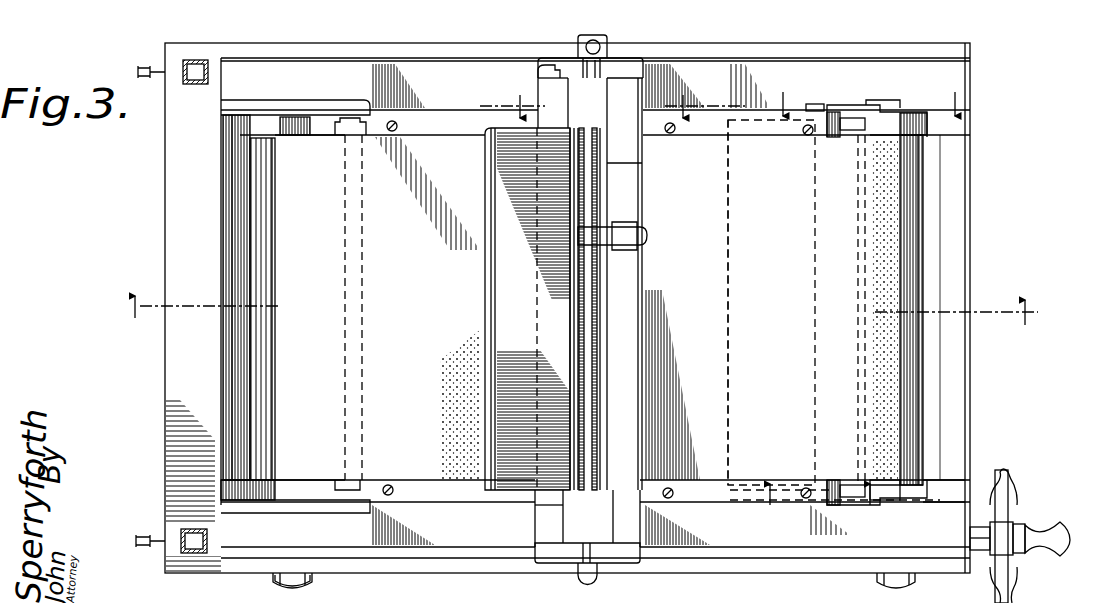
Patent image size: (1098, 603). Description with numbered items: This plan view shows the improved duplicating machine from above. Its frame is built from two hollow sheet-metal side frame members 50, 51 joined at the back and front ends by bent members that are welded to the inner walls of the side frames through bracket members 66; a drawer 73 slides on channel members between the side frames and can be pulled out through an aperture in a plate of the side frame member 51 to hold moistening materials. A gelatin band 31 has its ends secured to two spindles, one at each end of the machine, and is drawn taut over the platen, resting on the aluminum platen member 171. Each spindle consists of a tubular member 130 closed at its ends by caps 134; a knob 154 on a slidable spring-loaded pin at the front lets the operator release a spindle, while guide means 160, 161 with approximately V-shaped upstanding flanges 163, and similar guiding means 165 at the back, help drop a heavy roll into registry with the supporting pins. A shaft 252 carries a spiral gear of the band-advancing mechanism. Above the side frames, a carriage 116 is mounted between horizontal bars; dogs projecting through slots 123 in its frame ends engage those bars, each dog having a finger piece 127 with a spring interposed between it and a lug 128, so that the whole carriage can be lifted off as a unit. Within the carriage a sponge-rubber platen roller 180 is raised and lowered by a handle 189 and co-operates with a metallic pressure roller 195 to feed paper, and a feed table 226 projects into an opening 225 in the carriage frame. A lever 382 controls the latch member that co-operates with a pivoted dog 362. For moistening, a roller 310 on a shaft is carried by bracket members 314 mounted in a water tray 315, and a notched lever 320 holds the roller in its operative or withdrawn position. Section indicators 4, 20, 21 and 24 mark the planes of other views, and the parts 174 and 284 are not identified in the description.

The section line 4- 4 is at (580, 310).
The section line 20- 20 is at (835, 494).
The section line 21- 21 is at (867, 94).
The section line 24- 24 is at (612, 104).
The gelatin band 31 is at (890, 220).
The side frame member 50 is at (720, 560).
The side frame member 51 is at (728, 58).
The bracket member 66 is at (236, 126).
The drawer 73 is at (350, 410).
The carriage 116 is at (625, 303).
The slot 123 is at (596, 78).
The finger piece 127 is at (600, 50).
The lug 128 is at (582, 42).
The tubular member 130 is at (285, 127).
The cap 134 is at (918, 124).
The knob 154 is at (893, 586).
The guide means 160 is at (940, 505).
The guide means 161 is at (915, 112).
The upstanding flange 163 is at (230, 488).
The guiding means 165 is at (255, 113).
The platen member 171 is at (430, 118).
The clip 174 is at (342, 128).
The platen roller 180 is at (592, 275).
The handle 189 is at (647, 240).
The pressure roller 195 is at (574, 376).
The opening 225 is at (570, 492).
The feed table 226 is at (493, 351).
The shaft 252 is at (983, 550).
The knob handle 284 is at (1012, 525).
The moistening roller 310 is at (822, 268).
The bracket member 314 is at (842, 120).
The tray 315 is at (730, 174).
The lever 320 is at (872, 112).
The dog 362 is at (815, 104).
The lever 382 is at (540, 68).